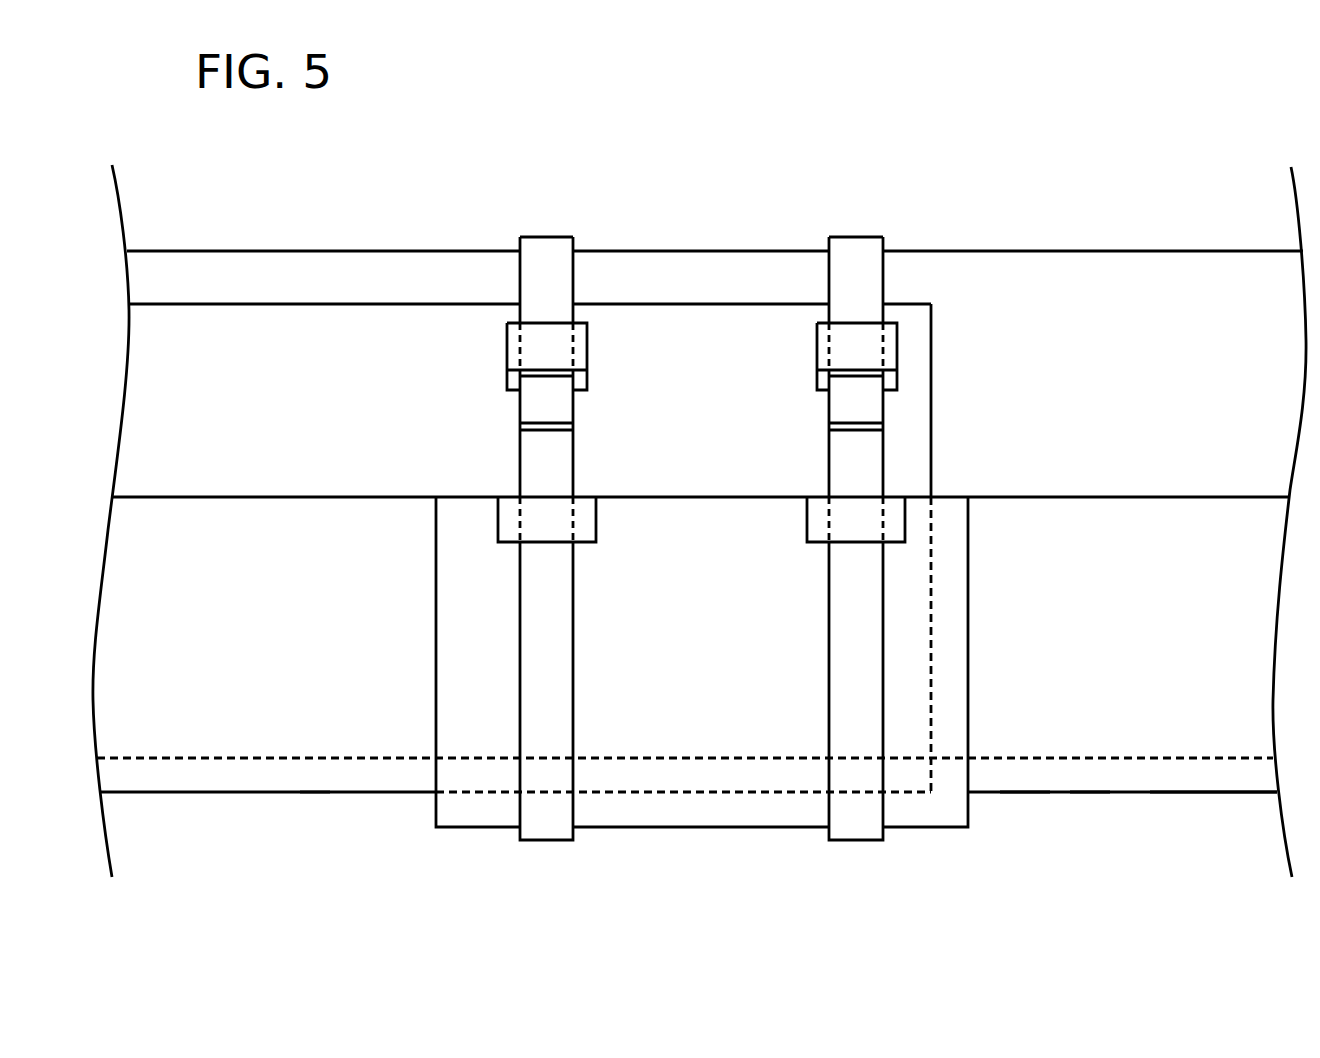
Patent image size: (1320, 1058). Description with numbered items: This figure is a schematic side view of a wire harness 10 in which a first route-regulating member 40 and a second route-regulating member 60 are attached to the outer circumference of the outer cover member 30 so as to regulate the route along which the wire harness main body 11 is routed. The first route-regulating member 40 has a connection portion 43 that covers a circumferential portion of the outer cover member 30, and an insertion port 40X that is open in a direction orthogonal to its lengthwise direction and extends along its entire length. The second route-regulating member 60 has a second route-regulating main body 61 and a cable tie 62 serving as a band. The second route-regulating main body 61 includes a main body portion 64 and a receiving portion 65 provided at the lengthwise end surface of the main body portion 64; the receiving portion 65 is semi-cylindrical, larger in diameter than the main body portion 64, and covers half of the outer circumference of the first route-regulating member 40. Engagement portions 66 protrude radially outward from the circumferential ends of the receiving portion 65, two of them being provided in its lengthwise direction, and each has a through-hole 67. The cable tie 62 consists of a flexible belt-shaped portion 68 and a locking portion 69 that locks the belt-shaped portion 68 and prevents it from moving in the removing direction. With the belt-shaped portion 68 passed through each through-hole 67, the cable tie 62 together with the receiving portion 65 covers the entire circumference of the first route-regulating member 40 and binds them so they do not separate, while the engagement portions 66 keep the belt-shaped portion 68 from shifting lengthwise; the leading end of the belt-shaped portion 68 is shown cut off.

The wire harness 10 is at (972, 130).
The wire harness main body 11 is at (187, 250).
The outer cover member 30 is at (715, 217).
The insertion port 40X is at (277, 306).
The first route-regulating member 40 is at (200, 796).
The connection portion 43 is at (316, 740).
The second route-regulating member 60 is at (1172, 797).
The second route-regulating main body 61 is at (1087, 794).
The main body portion 64 is at (1020, 794).
The receiving portion 65 is at (705, 828).
The engagement portion 66 is at (498, 520).
The through-hole 67 is at (575, 527).
The cable tie 62 is at (546, 236).
The belt-shaped portion 68 is at (537, 261).
The locking portion 69 is at (507, 342).